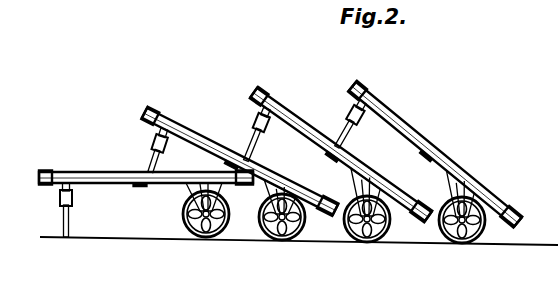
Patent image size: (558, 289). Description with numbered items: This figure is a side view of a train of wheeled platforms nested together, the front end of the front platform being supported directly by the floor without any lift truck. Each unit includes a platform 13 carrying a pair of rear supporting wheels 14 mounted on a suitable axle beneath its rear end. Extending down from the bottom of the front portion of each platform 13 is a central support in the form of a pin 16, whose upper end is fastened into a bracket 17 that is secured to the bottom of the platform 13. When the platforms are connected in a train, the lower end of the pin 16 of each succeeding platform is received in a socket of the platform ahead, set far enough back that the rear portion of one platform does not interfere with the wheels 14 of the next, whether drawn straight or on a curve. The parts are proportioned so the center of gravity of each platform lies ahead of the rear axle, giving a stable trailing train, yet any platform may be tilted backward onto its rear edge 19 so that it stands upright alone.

The platform 13 is at (289, 121).
The rear supporting wheel 14 is at (183, 218).
The pin 16 is at (70, 221).
The bracket 17 is at (73, 199).
The rear edge 19 is at (523, 205).